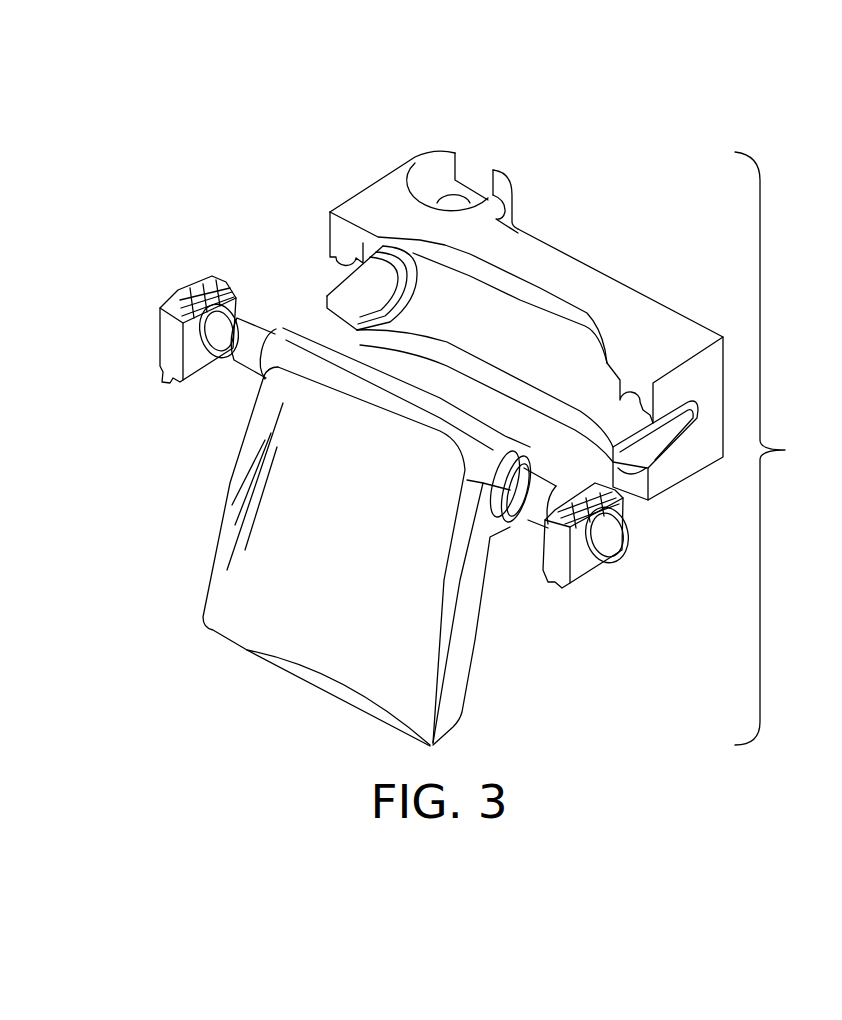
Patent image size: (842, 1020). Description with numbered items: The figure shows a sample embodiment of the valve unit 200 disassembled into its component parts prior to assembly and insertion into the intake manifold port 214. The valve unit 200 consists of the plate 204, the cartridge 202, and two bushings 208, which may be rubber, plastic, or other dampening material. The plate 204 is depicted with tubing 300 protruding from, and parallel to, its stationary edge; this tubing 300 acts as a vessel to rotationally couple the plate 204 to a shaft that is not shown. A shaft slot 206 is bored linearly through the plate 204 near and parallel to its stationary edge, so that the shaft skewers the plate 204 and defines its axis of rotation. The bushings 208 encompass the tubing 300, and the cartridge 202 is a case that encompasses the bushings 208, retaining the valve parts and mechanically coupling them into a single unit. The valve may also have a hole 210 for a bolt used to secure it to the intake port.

The valve unit 200 is at (784, 448).
The cartridge 202 is at (638, 352).
The plate 204 is at (326, 565).
The shaft slot 206 is at (641, 548).
The bushings 208 is at (132, 327).
The hole 210 is at (486, 160).
The intake manifold port 214 is at (518, 545).
The tubing 300 is at (263, 318).